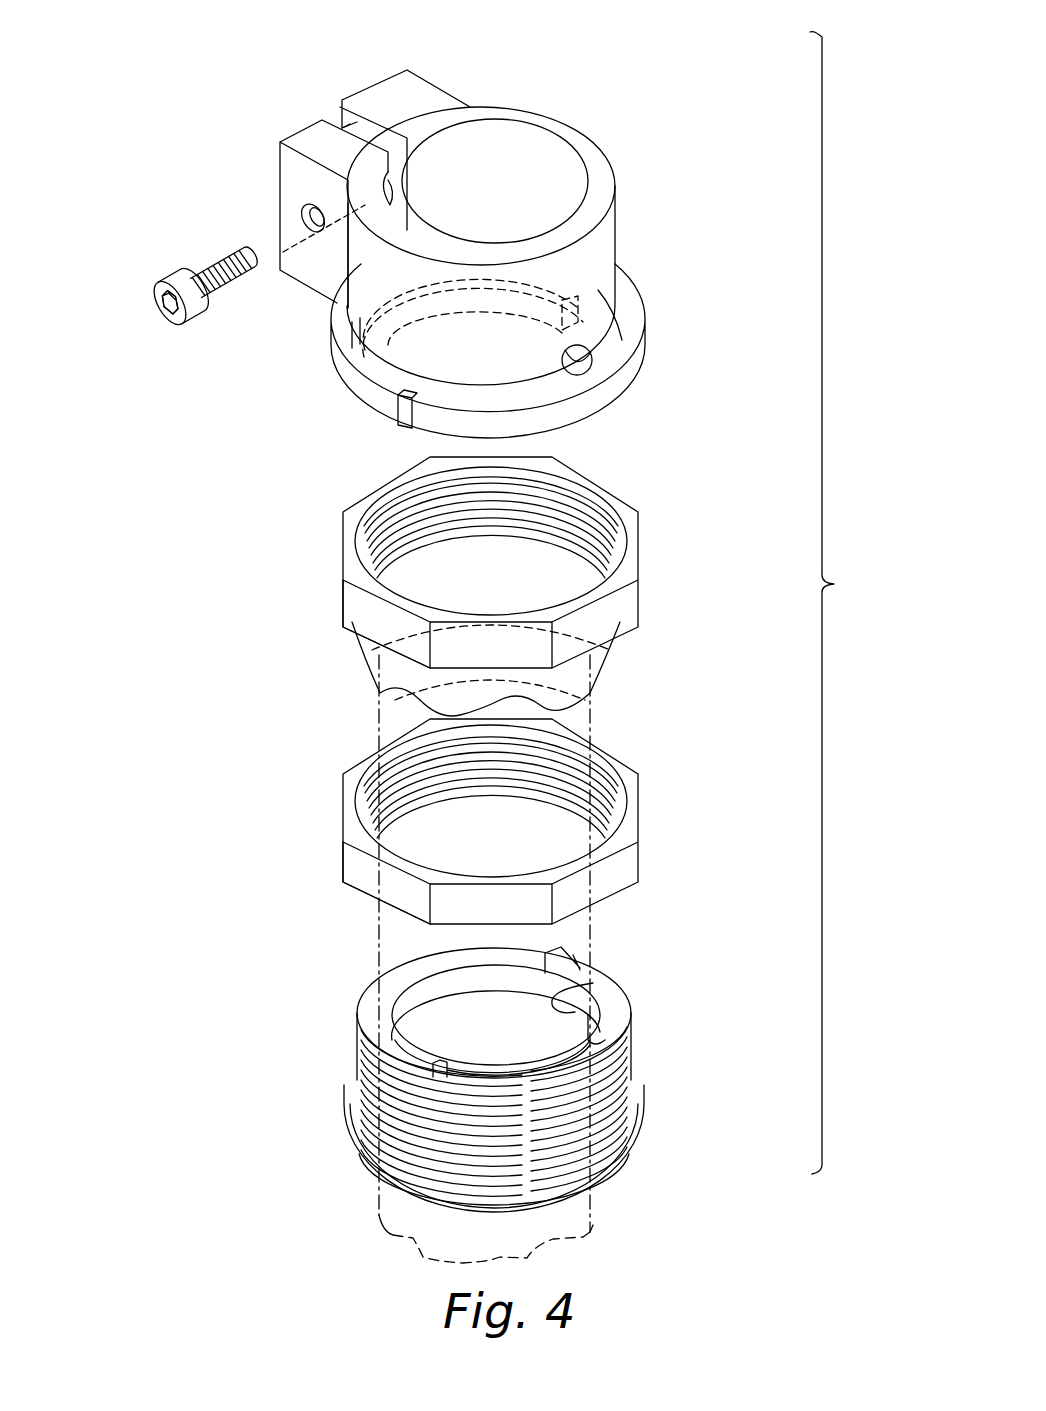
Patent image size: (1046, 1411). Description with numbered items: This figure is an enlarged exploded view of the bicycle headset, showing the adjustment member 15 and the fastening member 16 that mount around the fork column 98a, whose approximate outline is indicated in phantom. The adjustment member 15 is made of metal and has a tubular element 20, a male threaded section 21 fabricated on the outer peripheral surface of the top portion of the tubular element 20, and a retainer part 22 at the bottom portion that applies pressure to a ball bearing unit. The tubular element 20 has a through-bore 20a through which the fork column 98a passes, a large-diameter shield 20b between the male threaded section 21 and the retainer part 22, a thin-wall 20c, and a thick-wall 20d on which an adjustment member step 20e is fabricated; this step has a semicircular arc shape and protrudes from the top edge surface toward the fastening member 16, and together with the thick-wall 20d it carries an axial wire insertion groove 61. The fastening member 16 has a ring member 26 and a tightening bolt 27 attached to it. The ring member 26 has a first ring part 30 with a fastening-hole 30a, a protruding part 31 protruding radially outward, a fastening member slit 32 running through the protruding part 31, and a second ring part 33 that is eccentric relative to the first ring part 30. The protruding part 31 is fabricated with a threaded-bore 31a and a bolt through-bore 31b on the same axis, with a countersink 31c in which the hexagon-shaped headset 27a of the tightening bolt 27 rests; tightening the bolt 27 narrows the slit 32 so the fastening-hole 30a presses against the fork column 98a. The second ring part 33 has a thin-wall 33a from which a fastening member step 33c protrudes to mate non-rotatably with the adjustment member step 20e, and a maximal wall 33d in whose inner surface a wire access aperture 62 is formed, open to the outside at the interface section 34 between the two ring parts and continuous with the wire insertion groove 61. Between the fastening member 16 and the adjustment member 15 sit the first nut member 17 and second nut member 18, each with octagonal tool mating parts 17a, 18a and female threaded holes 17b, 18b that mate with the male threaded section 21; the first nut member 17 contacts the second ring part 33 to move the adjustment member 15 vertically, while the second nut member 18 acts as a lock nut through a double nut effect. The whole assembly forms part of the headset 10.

The fitting assembly 10 is at (449, 631).
The adjustment member 15 is at (494, 1086).
The fastening member 16 is at (449, 220).
The first nut member 17 is at (493, 562).
The first octagonal tool mating part 17a is at (363, 610).
The first female threaded hole 17b is at (403, 518).
The second nut member 18 is at (491, 821).
The second octagonal tool mating part 18a is at (365, 870).
The second female threaded hole 18b is at (399, 758).
The tubular element 20 is at (486, 1086).
The through-bore 20a is at (592, 985).
The large-diameter shield 20b is at (620, 1145).
The thin-wall 20c is at (368, 1027).
The thick-wall 20d is at (620, 1047).
The adjustment member step 20e is at (565, 957).
The male threaded section 21 is at (618, 1085).
The retainer part 22 is at (512, 1207).
The ring member 26 is at (601, 148).
The tightening bolt 27 is at (200, 272).
The headset 27a is at (180, 325).
The first ring part 30 is at (612, 178).
The fastening-hole 30a is at (520, 158).
The protruding part 31 is at (315, 138).
The threaded-bore 31a is at (388, 180).
The bolt through-bore 31b is at (320, 243).
The countersink 31c is at (293, 230).
The fastening member slit 32 is at (352, 122).
The second ring part 33 is at (636, 366).
The thin-wall 33a is at (345, 347).
The fastening member step 33c is at (397, 414).
The maximal wall 33d is at (627, 345).
The interface section 34 is at (592, 345).
The wire insertion groove 61 is at (598, 1040).
The wire access aperture 62 is at (529, 303).
The fork column 98a is at (598, 720).